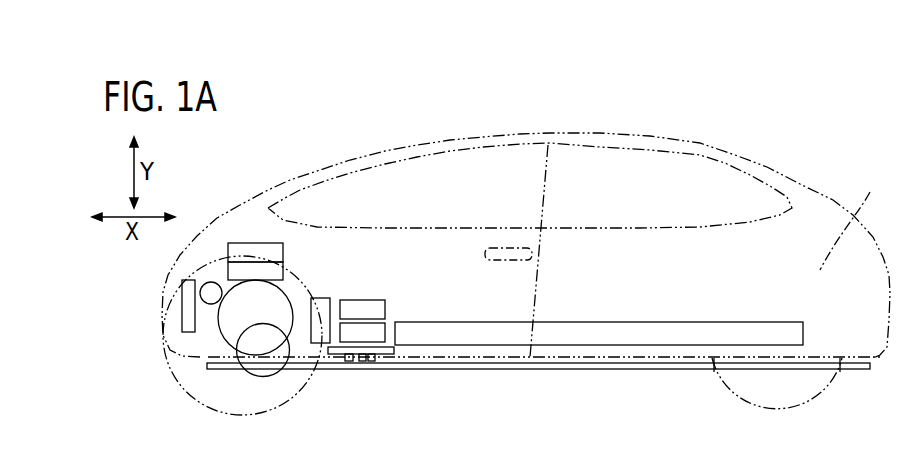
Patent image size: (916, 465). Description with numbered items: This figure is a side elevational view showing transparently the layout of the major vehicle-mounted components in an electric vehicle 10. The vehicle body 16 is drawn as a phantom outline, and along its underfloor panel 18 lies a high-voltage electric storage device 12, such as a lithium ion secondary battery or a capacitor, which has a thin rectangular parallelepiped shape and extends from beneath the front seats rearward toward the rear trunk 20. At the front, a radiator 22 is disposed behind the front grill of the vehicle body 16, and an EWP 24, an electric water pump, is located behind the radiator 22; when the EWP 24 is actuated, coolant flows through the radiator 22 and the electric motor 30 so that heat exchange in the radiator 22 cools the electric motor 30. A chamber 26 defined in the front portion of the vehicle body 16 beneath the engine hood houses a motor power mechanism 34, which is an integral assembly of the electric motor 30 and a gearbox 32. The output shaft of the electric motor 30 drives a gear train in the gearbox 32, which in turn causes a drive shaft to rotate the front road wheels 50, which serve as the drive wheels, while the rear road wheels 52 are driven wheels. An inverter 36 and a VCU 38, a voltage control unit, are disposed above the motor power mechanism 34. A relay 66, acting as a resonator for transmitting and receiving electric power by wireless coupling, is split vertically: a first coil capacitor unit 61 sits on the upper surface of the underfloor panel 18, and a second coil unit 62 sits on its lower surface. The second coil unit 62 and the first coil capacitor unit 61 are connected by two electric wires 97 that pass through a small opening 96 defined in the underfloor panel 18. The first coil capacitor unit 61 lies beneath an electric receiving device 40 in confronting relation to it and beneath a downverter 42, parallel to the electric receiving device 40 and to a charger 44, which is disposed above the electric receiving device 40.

The electric vehicle 10 is at (247, 137).
The electric storage device 12 is at (742, 322).
The vehicle body 16 is at (700, 145).
The underfloor panel 18 is at (594, 368).
The rear trunk 20 is at (850, 219).
The radiator 22 is at (185, 303).
The EWP (Electric Water Pump) 24 is at (213, 283).
The chamber 26 is at (228, 230).
The electric motor 30 is at (233, 333).
The gearbox 32 is at (252, 351).
The motor power mechanism 34 is at (199, 340).
The inverter 36 is at (283, 268).
The VCU (Voltage Control Unit) 38 is at (283, 251).
The electric receiving device 40 is at (378, 333).
The downverter 42 is at (318, 298).
The charger 44 is at (356, 300).
The front road wheels 50 is at (237, 410).
The rear road wheels 52 is at (720, 392).
The first coil capacitor unit 61 is at (397, 348).
The second coil unit 62 is at (504, 370).
The relay (resonator) 66 is at (470, 391).
The small opening 96 is at (374, 362).
The electric wires 97 is at (349, 361).